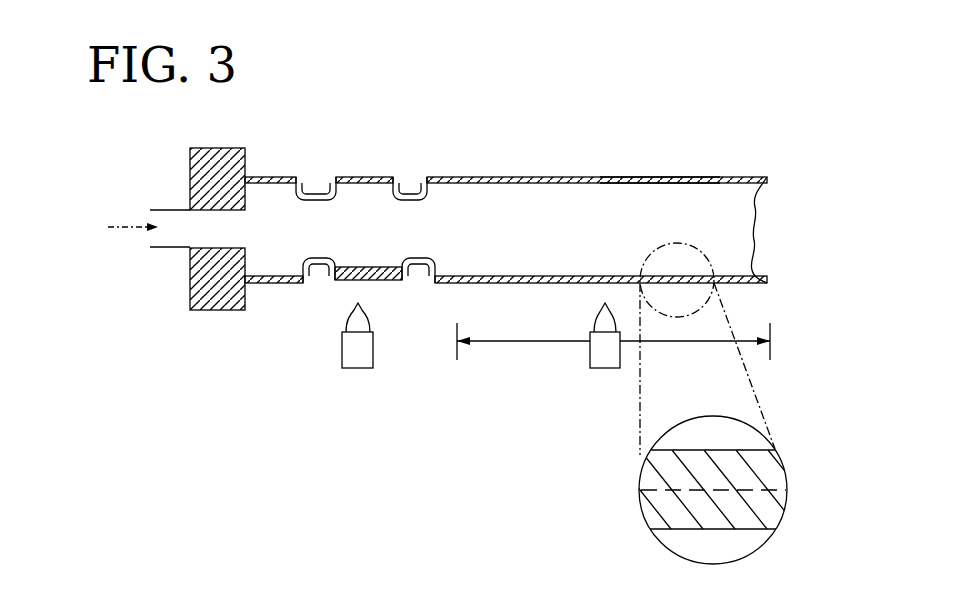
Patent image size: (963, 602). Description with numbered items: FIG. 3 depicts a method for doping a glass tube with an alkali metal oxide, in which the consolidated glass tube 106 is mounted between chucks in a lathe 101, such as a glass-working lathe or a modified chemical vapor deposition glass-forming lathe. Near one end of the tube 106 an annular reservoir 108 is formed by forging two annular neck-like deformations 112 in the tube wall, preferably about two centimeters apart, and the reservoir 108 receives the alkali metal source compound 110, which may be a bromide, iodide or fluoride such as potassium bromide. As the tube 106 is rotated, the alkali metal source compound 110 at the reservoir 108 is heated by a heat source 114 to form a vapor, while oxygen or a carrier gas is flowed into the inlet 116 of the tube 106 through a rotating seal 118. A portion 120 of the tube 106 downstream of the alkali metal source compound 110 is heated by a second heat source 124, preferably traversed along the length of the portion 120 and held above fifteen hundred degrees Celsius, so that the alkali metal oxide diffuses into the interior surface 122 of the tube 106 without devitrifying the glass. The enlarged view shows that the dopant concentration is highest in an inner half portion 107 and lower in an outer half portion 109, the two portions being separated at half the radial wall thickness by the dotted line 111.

The lathe 101 is at (698, 93).
The glass tube 106 is at (512, 176).
The inner half portion 107 is at (765, 473).
The reservoir 108 is at (338, 283).
The outer half portion 109 is at (765, 508).
The alkali metal source compound 110 is at (365, 266).
The dotted line 111 is at (645, 510).
The annular neck-like deformations 112 is at (317, 190).
The heat source 114 is at (342, 341).
The inlet 116 is at (152, 209).
The rotating seal 118 is at (217, 148).
The portion 120 is at (647, 178).
The interior surface 122 is at (668, 185).
The heat source 124 is at (590, 350).